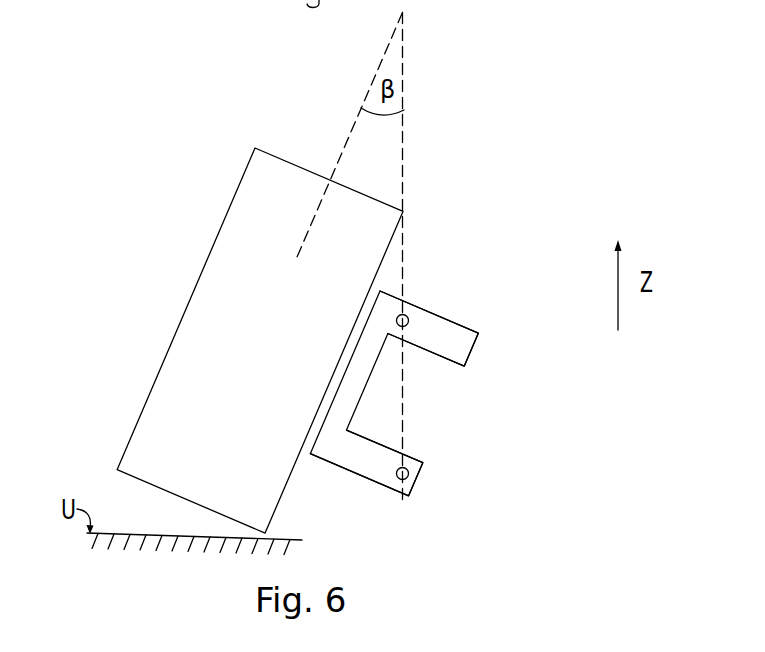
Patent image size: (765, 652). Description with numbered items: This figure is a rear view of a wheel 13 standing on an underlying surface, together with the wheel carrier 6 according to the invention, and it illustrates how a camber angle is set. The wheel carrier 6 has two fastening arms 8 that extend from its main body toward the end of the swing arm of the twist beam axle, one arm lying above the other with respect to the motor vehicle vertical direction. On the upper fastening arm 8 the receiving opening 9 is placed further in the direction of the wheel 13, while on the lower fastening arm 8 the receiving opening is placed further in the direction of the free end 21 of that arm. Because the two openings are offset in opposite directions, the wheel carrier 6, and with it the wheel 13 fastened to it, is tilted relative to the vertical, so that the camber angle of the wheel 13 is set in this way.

The wheel 13 is at (215, 307).
The wheel carrier 6 is at (355, 377).
The fastening arm 8 is at (478, 344).
The receiving opening 9 is at (407, 316).
The free end 21 is at (424, 488).